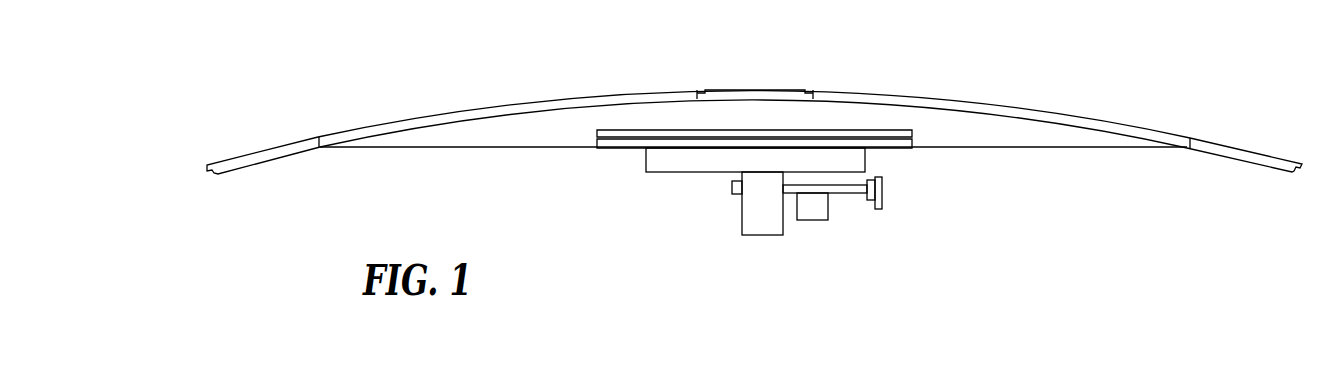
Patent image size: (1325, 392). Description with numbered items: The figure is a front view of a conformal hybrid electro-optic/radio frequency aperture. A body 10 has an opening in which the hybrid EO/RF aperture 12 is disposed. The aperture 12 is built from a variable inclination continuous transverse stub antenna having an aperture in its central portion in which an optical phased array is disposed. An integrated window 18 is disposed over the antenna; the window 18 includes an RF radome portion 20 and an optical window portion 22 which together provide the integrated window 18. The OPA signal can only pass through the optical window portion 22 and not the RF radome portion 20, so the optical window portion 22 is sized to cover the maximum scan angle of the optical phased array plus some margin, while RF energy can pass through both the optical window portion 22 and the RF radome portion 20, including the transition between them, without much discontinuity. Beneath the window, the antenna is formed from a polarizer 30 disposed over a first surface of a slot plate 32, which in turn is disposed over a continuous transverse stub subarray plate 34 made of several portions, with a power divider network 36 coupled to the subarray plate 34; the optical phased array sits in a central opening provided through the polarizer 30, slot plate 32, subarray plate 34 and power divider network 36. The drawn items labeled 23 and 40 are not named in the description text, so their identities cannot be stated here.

The body 10 is at (258, 163).
The conformal hybrid electro-optic/radio frequency (EO/RF) aperture 12 is at (761, 207).
The integrated window 18 is at (754, 135).
The RF radome portion 20 is at (863, 90).
The optical window portion 22 is at (735, 88).
The inner skin 23 is at (578, 117).
The polarizer 30 is at (597, 134).
The slot plate 32 is at (628, 143).
The continuous transverse stub (CTS) subarray plate 34 is at (685, 157).
The power divider network 36 is at (878, 163).
The motor 40 is at (762, 215).